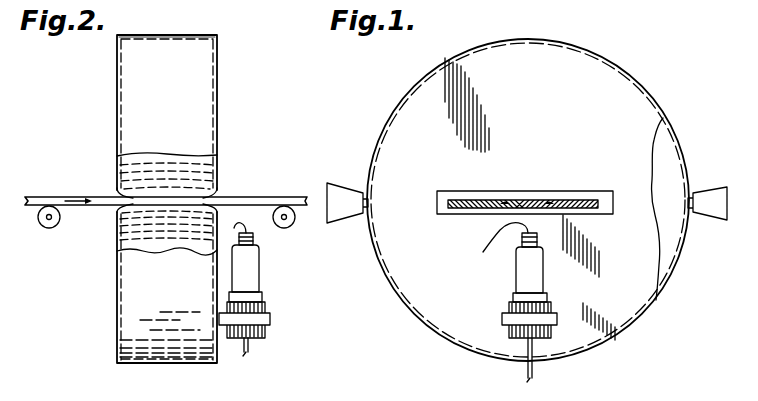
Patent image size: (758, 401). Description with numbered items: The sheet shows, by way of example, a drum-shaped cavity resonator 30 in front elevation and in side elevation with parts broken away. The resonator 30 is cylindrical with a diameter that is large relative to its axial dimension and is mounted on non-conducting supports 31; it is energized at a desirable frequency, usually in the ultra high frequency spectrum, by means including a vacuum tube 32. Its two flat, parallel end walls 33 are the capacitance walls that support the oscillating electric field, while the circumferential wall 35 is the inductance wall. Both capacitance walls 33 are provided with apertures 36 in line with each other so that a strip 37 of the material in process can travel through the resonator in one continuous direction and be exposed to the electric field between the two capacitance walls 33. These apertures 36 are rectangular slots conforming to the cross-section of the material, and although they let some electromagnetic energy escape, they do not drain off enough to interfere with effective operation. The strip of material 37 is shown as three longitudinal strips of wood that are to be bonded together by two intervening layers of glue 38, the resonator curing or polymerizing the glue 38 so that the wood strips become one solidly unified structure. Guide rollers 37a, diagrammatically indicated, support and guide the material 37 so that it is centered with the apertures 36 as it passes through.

In FIG. 2, the cavity resonator 30 is at (224, 96).
In FIG. 1, the cavity resonator 30 is at (411, 83).
In FIG. 1, the non-conducting supports 31 is at (345, 223).
In FIG. 2, the vacuum tube 32 is at (260, 266).
In FIG. 1, the vacuum tube 32 is at (545, 278).
In FIG. 2, the end walls 33 is at (117, 128).
In FIG. 1, the end walls 33 is at (640, 105).
In FIG. 2, the circumferential wall 35 is at (218, 35).
In FIG. 1, the circumferential wall 35 is at (673, 133).
In FIG. 2, the apertures 36 is at (217, 191).
In FIG. 1, the apertures 36 is at (455, 192).
In FIG. 2, the strip of material 37 is at (264, 196).
In FIG. 1, the strip of material 37 is at (586, 190).
In FIG. 2, the guide rollers 37a is at (59, 220).
In FIG. 1, the layers of glue 38 is at (546, 203).